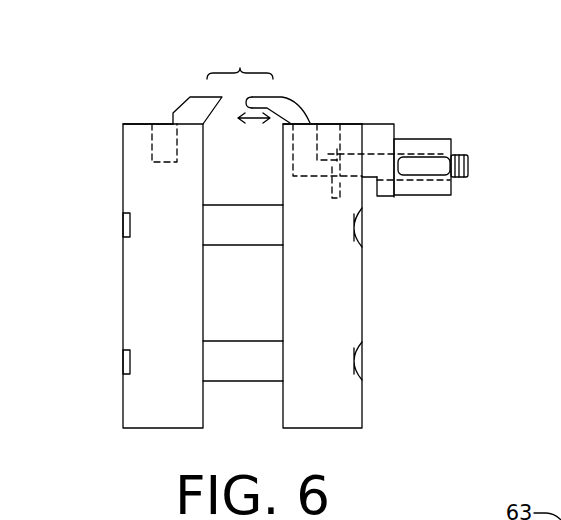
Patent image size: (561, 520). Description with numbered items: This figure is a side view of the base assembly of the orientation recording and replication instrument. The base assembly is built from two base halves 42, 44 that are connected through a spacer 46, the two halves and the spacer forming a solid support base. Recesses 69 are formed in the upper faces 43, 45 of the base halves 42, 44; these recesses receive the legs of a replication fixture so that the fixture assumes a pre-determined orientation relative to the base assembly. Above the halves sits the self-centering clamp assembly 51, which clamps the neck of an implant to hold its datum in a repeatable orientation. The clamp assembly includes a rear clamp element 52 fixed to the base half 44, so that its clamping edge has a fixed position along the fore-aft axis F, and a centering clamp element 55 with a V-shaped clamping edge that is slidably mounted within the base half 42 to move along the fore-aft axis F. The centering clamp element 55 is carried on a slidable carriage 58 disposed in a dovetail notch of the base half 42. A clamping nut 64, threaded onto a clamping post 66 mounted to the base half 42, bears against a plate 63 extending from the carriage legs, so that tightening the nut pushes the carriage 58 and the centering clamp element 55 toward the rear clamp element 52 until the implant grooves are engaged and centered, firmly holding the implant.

The base half 42 is at (343, 298).
The upper face 43 is at (347, 123).
The base half 44 is at (142, 305).
The upper face 45 is at (140, 121).
The spacer 46 is at (218, 228).
The self-centering clamp assembly 51 is at (238, 70).
The rear clamp element 52 is at (197, 103).
The centering clamp element 55 is at (280, 107).
The slidable carriage 58 is at (293, 152).
The plate 63 is at (386, 190).
The clamping nut 64 is at (417, 138).
The clamping post 66 is at (457, 155).
The recesses 69 is at (156, 137).
The fore-aft axis F is at (255, 123).